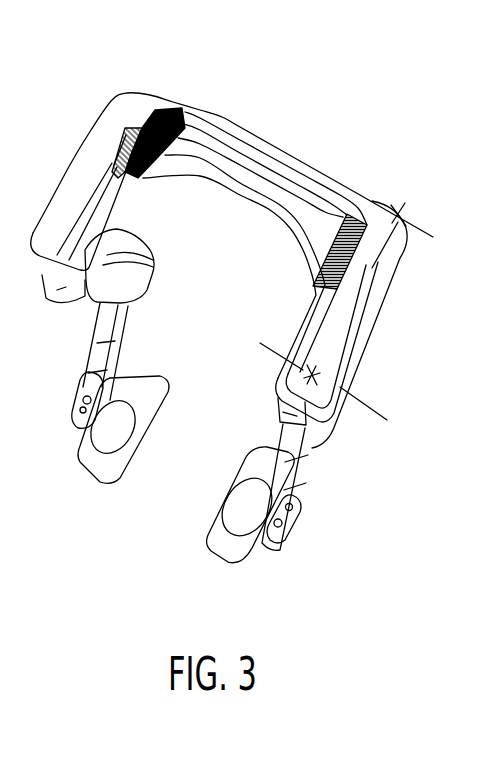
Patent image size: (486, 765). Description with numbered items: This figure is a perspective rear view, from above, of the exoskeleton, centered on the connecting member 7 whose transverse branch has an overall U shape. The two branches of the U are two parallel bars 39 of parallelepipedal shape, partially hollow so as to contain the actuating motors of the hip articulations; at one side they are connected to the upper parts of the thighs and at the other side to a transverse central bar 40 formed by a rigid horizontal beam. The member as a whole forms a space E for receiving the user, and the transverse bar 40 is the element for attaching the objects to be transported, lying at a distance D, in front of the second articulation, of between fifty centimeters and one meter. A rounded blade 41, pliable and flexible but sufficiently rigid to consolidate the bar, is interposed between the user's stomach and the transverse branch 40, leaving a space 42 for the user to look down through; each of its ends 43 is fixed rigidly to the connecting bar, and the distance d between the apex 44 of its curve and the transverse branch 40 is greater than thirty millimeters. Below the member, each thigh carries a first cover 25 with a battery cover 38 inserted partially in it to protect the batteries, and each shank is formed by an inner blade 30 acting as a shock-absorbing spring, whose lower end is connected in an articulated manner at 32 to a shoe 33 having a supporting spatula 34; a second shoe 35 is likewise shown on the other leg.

The connecting member 7 is at (78, 118).
The first cover 25 is at (352, 382).
The inner blade 30 is at (100, 362).
The articulation 32 is at (80, 420).
The shoe 33 is at (132, 454).
The supporting spatula 34 is at (106, 478).
The ear pad 35 is at (260, 463).
The battery cover 38 is at (53, 302).
The parallel bars 39 is at (78, 176).
The transverse central bar 40 is at (267, 144).
The rounded blade 41 is at (248, 135).
The space 42 is at (193, 144).
The ends 43 is at (170, 106).
The apex 44 is at (255, 215).
The distance d is at (233, 182).
The distance D is at (373, 322).
The space E is at (230, 243).